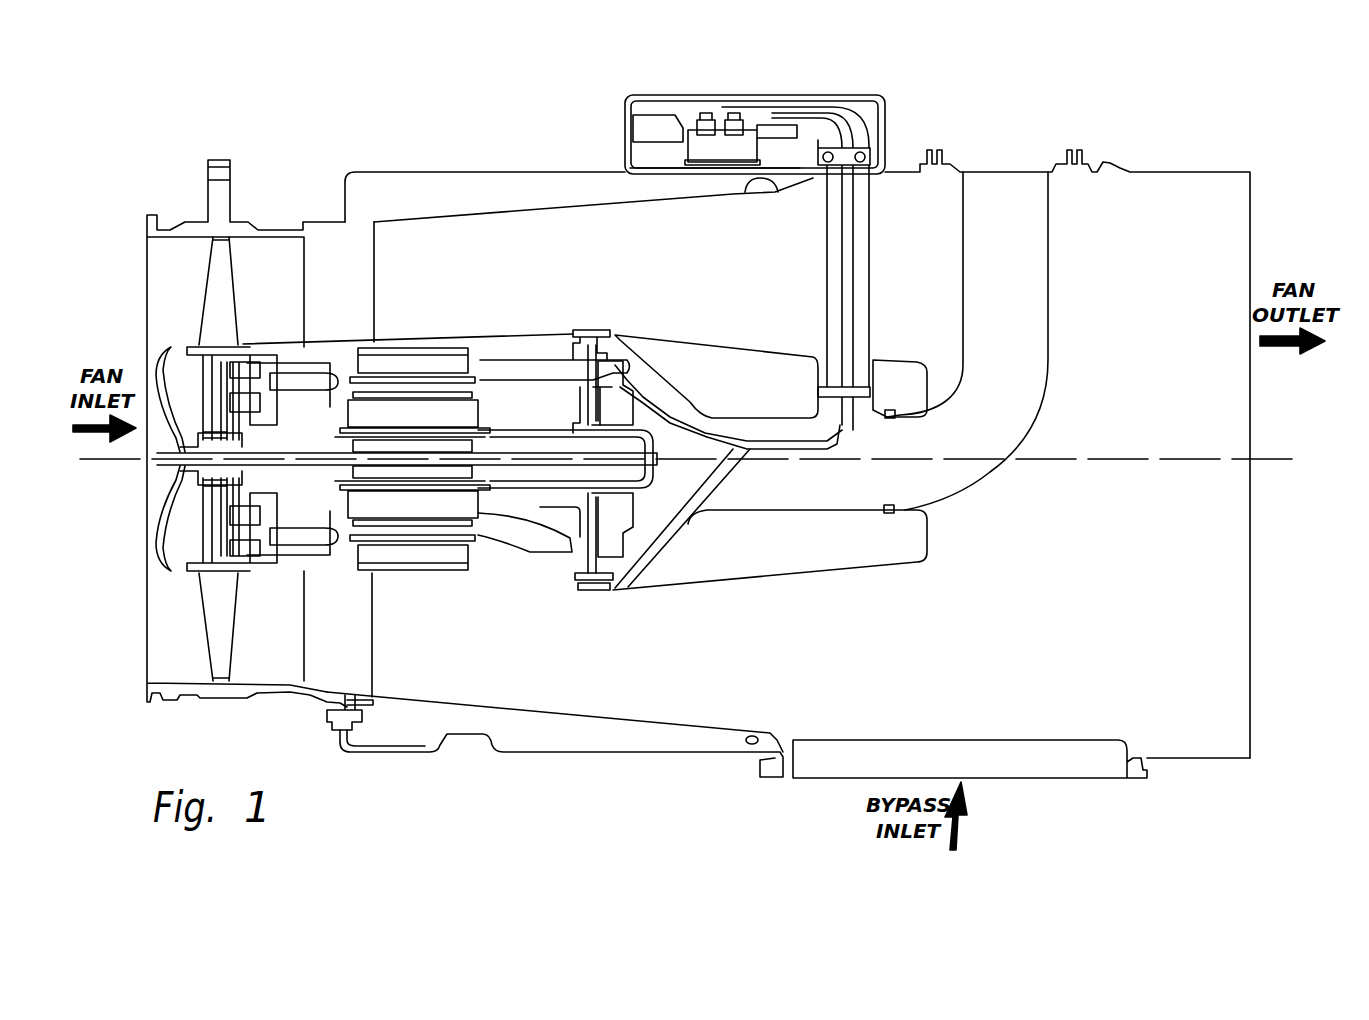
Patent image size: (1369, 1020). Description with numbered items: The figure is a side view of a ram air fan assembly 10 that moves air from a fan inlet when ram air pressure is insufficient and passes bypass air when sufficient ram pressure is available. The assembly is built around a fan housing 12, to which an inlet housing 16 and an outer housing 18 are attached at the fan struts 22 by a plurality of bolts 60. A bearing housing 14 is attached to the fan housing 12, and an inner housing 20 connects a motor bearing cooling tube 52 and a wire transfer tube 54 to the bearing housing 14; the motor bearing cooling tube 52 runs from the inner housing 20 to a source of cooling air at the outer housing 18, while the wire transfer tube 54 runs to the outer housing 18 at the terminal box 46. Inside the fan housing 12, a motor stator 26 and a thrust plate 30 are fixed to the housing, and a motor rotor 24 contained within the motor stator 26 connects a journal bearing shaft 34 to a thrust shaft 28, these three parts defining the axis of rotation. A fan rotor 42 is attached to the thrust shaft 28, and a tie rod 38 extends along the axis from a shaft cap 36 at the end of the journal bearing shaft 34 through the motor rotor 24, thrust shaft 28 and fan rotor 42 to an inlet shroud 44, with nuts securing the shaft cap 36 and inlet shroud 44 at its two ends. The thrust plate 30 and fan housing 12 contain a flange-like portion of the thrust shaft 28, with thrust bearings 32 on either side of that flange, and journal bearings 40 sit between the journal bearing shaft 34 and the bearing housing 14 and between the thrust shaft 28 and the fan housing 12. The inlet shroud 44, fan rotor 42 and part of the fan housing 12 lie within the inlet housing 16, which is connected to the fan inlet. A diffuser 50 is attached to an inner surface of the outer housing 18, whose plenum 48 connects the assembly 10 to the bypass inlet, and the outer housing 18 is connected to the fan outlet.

The ram air fan assembly 10 is at (205, 110).
The fan housing 12 is at (297, 343).
The bearing housing 14 is at (583, 557).
The inlet housing 16 is at (202, 698).
The outer housing 18 is at (402, 755).
The inner housing 20 is at (803, 572).
The fan struts 22 is at (330, 257).
The motor rotor 24 is at (417, 500).
The motor stator 26 is at (355, 557).
The thrust shaft 28 is at (290, 520).
The thrust plate 30 is at (215, 520).
The thrust bearings 32 is at (230, 402).
The journal bearing shaft 34 is at (620, 440).
The shaft cap 36 is at (645, 483).
The tie rod 38 is at (657, 462).
The journal bearings 40 is at (292, 420).
The fan rotor 42 is at (215, 608).
The inlet shroud 44 is at (165, 503).
The terminal box 46 is at (813, 96).
The plenum 48 is at (1077, 757).
The diffuser 50 is at (593, 713).
The motor bearing cooling tube 52 is at (1048, 237).
The wire transfer tube 54 is at (869, 240).
The bolts 60 is at (327, 717).